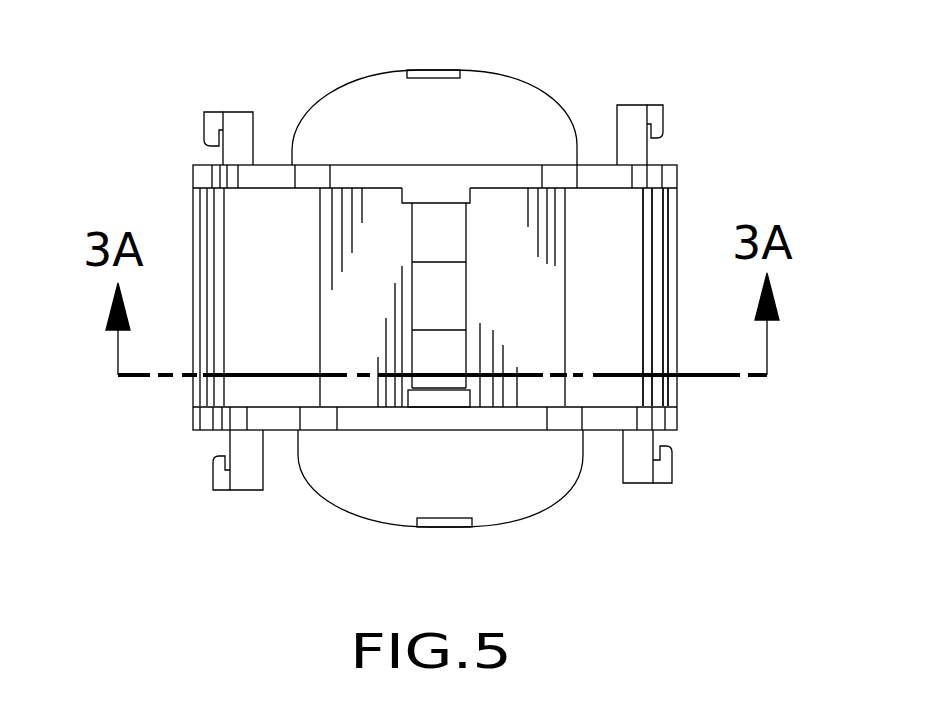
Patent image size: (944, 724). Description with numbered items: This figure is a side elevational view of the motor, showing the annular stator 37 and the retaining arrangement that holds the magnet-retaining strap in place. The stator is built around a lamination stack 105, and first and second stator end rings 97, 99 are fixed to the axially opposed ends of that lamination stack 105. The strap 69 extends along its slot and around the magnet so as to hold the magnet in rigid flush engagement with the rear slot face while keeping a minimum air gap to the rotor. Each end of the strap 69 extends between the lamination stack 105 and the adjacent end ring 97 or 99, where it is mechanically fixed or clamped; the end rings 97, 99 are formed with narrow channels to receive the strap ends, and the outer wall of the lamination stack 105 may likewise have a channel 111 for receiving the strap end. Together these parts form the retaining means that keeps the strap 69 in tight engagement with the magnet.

The annular stator 37 is at (160, 183).
The first strap 69 is at (420, 233).
The first stator end ring 97 is at (270, 178).
The second stator end ring 99 is at (283, 422).
The lamination stack 105 is at (638, 217).
The channel 111 is at (465, 315).